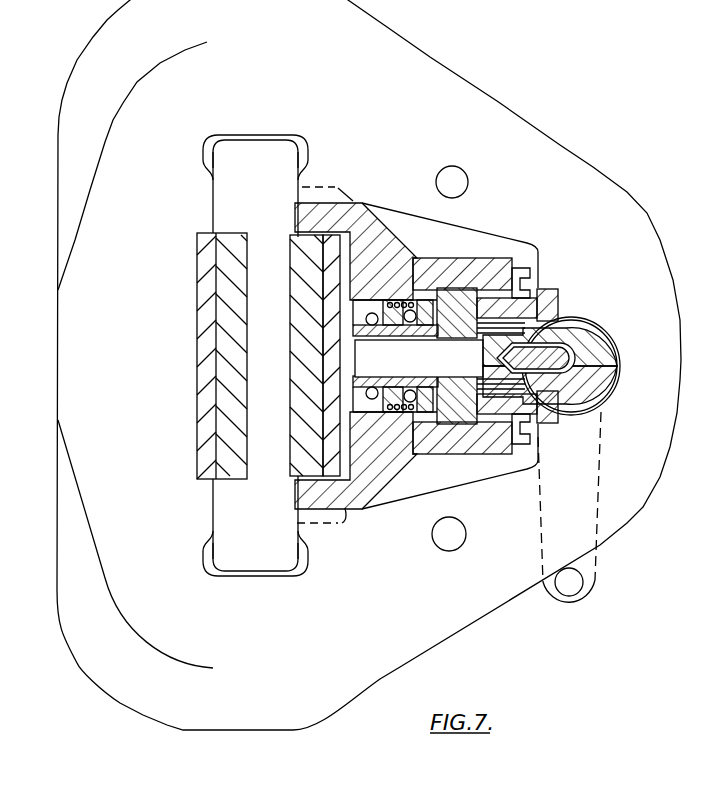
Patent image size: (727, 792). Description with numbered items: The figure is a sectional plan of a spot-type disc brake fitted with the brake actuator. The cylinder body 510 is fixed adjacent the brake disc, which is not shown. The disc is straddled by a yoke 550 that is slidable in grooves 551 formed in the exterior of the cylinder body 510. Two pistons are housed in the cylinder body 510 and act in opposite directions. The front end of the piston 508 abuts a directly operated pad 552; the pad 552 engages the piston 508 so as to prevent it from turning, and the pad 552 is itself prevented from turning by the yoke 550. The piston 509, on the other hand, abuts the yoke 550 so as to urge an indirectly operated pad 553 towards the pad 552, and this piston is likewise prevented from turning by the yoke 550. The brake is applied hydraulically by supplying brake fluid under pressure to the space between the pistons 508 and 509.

The yoke 550 is at (536, 156).
The grooves 551 is at (330, 202).
The directly operated pad 552 is at (287, 474).
The indirectly operated pad 553 is at (233, 240).
The cylinder body 510 is at (355, 200).
The piston 508 is at (370, 285).
The piston 509 is at (558, 290).